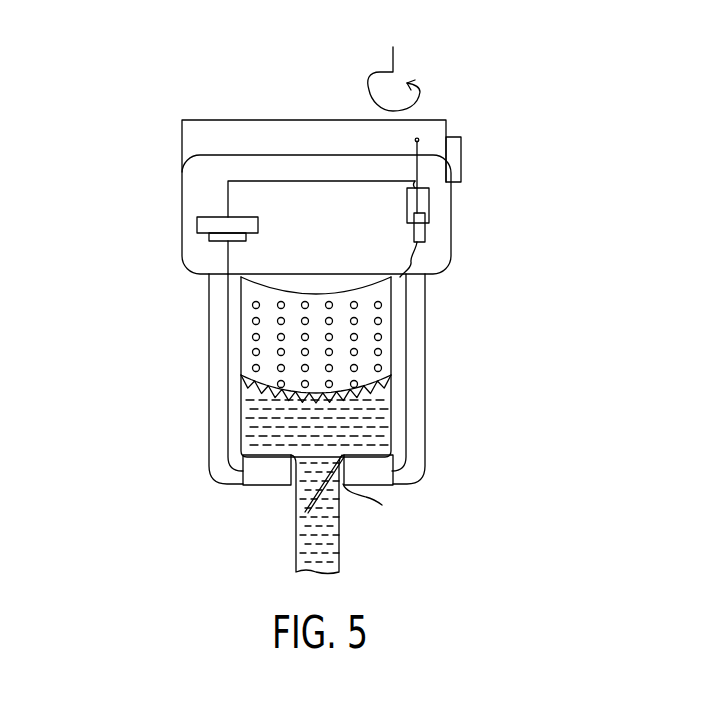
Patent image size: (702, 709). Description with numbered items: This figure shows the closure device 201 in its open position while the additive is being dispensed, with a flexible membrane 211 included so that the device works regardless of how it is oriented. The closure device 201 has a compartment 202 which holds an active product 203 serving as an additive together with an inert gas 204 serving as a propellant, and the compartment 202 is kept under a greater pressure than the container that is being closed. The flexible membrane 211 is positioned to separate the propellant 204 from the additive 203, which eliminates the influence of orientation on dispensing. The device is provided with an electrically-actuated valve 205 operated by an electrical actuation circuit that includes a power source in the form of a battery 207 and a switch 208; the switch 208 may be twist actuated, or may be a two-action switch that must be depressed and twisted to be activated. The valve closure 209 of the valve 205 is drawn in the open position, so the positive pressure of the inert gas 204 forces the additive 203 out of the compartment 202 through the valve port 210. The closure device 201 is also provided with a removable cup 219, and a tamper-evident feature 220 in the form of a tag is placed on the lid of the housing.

The removable cup 219 is at (182, 140).
The tamper-evident feature 220 is at (527, 152).
The closure device 201 is at (182, 187).
The battery 207 is at (218, 217).
The switch 208 is at (429, 204).
The inert gas 204 is at (368, 337).
The flexible membrane 211 is at (256, 382).
The compartment 202 is at (305, 369).
The active product 203 is at (368, 431).
The electrically-actuated valve 205 is at (373, 475).
The valve port 210 is at (403, 532).
The valve closure 209 is at (305, 493).